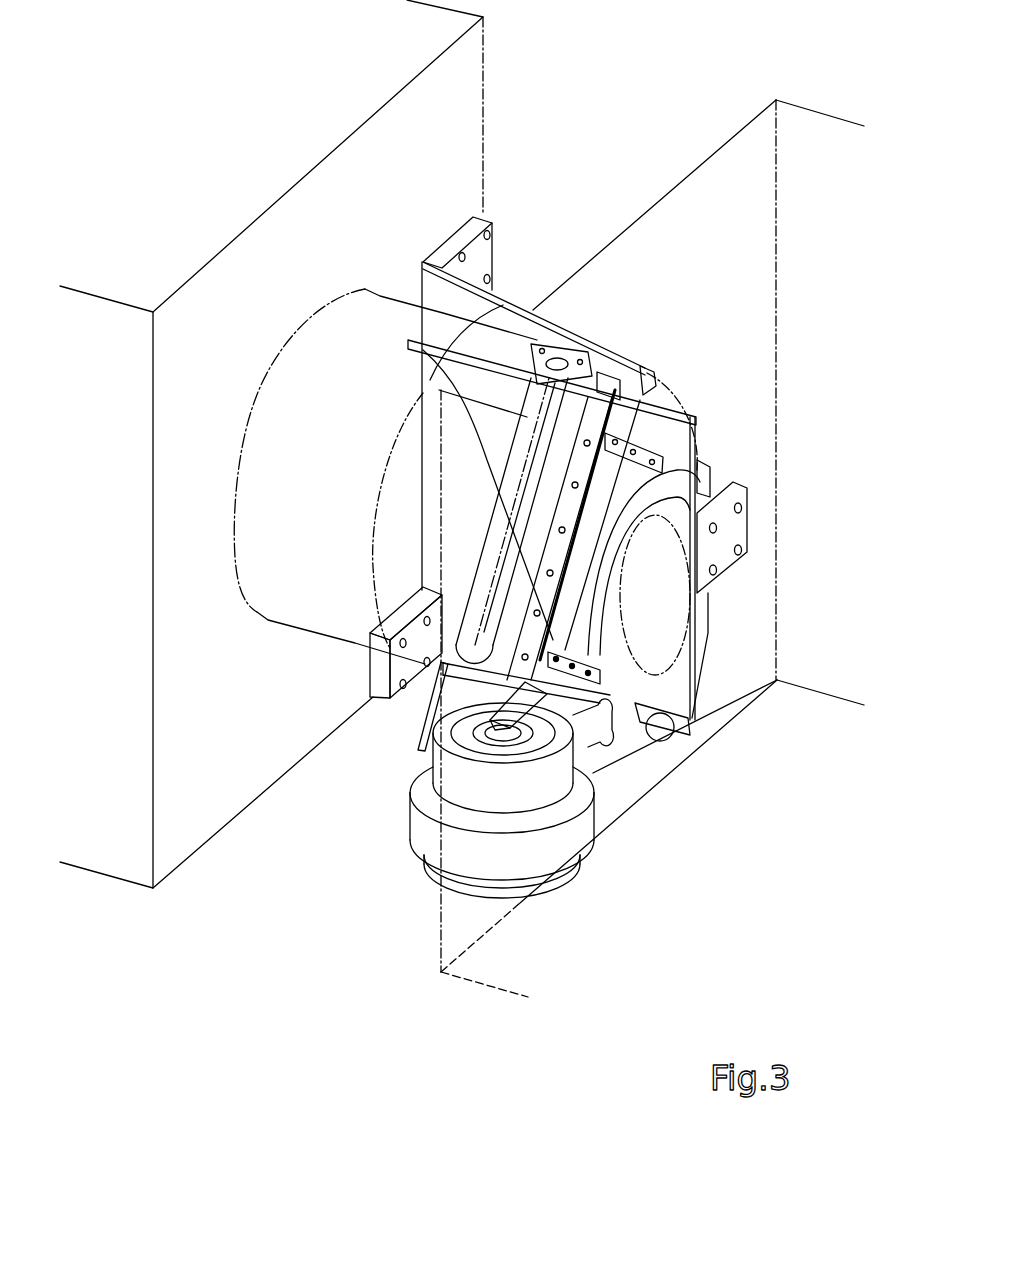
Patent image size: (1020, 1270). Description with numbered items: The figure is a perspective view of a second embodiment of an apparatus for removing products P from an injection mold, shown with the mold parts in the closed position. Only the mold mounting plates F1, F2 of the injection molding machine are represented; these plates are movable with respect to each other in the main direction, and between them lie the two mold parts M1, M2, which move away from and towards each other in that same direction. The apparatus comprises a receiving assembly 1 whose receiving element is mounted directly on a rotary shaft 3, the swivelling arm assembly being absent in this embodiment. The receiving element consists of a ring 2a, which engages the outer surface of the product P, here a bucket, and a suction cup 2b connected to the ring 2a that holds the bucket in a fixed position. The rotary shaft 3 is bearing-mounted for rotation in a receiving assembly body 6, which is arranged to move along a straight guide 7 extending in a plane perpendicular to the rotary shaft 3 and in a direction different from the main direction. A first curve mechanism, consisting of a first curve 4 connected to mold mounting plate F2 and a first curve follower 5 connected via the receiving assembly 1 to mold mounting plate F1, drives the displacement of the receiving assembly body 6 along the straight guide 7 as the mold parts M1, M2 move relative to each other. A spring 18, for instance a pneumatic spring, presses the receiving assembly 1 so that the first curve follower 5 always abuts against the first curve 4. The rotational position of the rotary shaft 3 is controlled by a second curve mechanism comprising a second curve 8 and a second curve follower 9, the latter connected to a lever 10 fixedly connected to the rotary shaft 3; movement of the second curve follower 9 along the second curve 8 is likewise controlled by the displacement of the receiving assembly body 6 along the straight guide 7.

The receiving assembly 1 is at (634, 792).
The ring 2a is at (585, 827).
The suction cup 2b is at (418, 752).
The rotary shaft 3 is at (580, 737).
The first curve 4 is at (491, 393).
The first curve follower 5 is at (683, 733).
The receiving assembly body 6 is at (600, 733).
The straight guide 7 is at (540, 607).
The second curve 8 is at (700, 477).
The second curve follower 9 is at (653, 710).
The lever 10 is at (627, 720).
The spring 18 is at (450, 697).
The product P is at (504, 806).
The mold mounting plate F1 is at (222, 383).
The mold mounting plate F2 is at (730, 245).
The mold part M1 is at (316, 513).
The mold part M2 is at (419, 551).